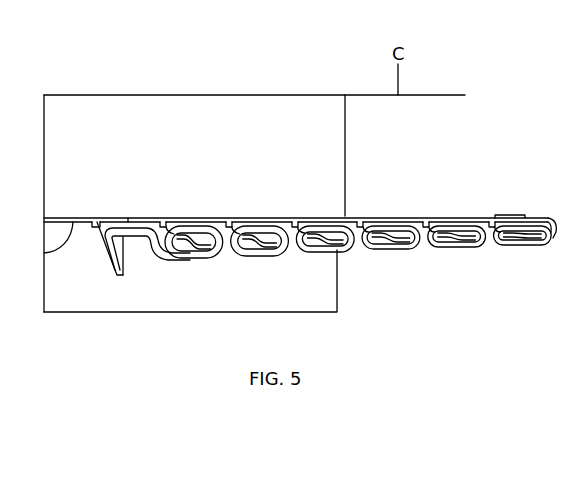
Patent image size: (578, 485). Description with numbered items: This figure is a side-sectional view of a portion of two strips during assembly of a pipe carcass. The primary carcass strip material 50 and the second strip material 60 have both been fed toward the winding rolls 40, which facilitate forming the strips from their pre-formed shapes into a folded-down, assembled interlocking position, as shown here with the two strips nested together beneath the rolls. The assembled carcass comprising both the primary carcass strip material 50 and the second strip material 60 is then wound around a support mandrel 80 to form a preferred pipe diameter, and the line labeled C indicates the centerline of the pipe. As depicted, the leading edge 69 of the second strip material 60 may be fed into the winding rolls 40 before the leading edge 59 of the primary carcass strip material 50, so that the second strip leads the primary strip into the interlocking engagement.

The winding rolls 40 is at (315, 277).
The primary carcass strip material 50 is at (451, 248).
The leading edge of the primary carcass strip material 59 is at (117, 276).
The second strip material 60 is at (420, 210).
The leading edge of the second strip material 69 is at (50, 252).
The support mandrel 80 is at (322, 141).